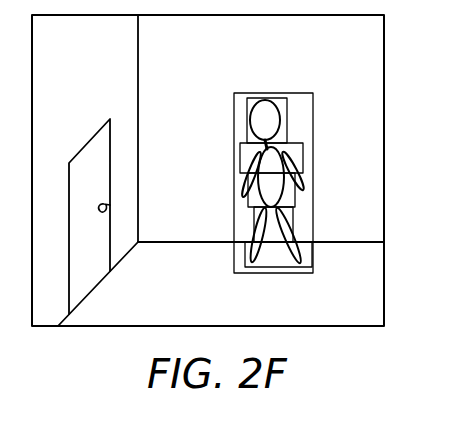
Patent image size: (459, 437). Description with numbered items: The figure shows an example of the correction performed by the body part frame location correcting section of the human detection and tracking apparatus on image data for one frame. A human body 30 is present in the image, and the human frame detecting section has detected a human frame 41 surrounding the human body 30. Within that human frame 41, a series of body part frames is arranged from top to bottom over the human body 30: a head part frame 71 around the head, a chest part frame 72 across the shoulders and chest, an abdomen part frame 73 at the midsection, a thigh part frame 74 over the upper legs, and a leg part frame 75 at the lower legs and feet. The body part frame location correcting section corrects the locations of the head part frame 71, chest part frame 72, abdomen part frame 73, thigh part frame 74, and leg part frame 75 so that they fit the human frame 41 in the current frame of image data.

The human body 30 is at (282, 95).
The human frame 41 is at (316, 112).
The head part frame 71 is at (247, 112).
The chest part frame 72 is at (240, 153).
The abdomen part frame 73 is at (248, 204).
The thigh part frame 74 is at (251, 218).
The leg part frame 75 is at (246, 258).